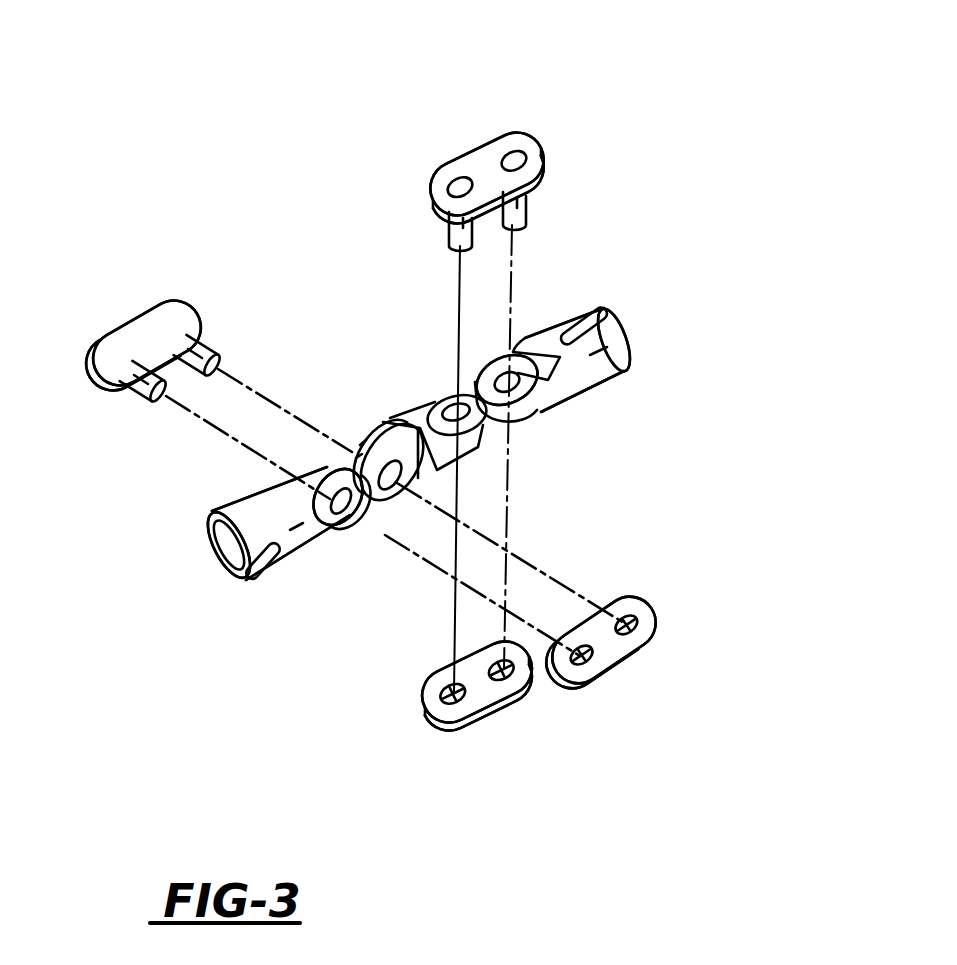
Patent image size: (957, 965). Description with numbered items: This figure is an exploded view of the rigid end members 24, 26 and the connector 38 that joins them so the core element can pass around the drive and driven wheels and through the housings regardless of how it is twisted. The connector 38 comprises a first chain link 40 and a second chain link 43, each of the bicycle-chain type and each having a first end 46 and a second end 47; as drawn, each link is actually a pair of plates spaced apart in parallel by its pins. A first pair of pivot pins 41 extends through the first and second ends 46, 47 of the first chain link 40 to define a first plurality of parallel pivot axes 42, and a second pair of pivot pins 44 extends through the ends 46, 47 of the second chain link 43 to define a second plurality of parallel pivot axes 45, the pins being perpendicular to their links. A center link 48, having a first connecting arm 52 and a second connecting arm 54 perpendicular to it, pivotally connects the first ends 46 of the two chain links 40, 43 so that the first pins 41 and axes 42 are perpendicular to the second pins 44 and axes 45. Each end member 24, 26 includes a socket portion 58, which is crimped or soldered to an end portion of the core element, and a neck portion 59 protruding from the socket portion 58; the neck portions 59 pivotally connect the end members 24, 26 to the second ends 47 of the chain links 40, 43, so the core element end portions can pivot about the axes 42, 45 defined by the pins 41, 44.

The first end member 24 is at (272, 590).
The second end member 26 is at (601, 340).
The connector 38 is at (615, 303).
The first chain link 40 is at (413, 445).
The first pair of pivot pins 41 is at (223, 355).
The first plurality of parallel pivot axes 42 is at (253, 380).
The second chain link 43 is at (484, 409).
The second pair of pivot pins 44 is at (533, 200).
The second plurality of parallel pivot axes 45 is at (510, 260).
The first end 46 is at (430, 200).
The second end 47 is at (540, 137).
The center link 48 is at (387, 401).
The first connecting arm 52 is at (372, 432).
The second connecting arm 54 is at (450, 410).
The socket portion 58 is at (630, 368).
The neck portion 59 is at (520, 405).